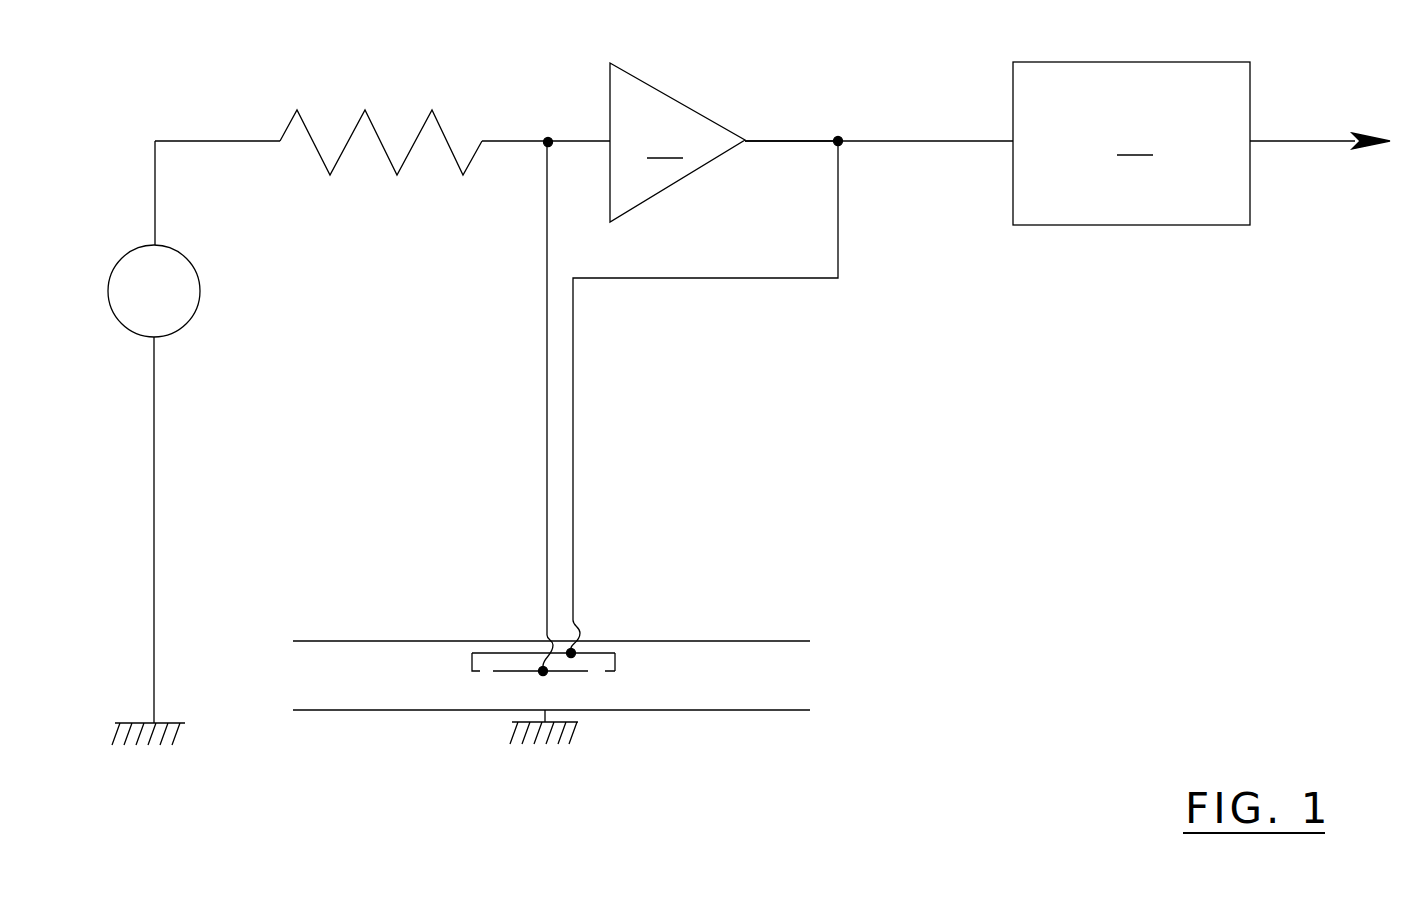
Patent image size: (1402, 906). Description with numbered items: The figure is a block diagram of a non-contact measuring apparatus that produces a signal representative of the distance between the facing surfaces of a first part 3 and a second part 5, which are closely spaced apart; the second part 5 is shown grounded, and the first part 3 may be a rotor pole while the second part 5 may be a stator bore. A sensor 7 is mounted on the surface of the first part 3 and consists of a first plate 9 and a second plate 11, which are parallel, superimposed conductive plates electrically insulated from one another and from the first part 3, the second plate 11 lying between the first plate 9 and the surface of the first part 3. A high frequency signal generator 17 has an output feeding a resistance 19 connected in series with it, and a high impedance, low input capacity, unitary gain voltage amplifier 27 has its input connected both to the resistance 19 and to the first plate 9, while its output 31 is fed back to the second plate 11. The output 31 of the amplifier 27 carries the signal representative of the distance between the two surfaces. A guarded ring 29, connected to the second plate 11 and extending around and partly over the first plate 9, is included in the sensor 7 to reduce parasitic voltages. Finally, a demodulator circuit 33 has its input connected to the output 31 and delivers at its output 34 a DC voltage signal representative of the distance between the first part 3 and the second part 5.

The first part 3 is at (407, 641).
The second part 5 is at (390, 710).
The sensor 7 is at (628, 663).
The first plate 9 is at (493, 671).
The second plate 11 is at (472, 653).
The high frequency signal generator 17 is at (187, 325).
The resistance 19 is at (397, 175).
The voltage amplifier 27 is at (677, 142).
The guarded ring 29 is at (615, 671).
The output 31 is at (790, 141).
The demodulator circuit 33 is at (1131, 143).
The output 34 is at (1280, 141).